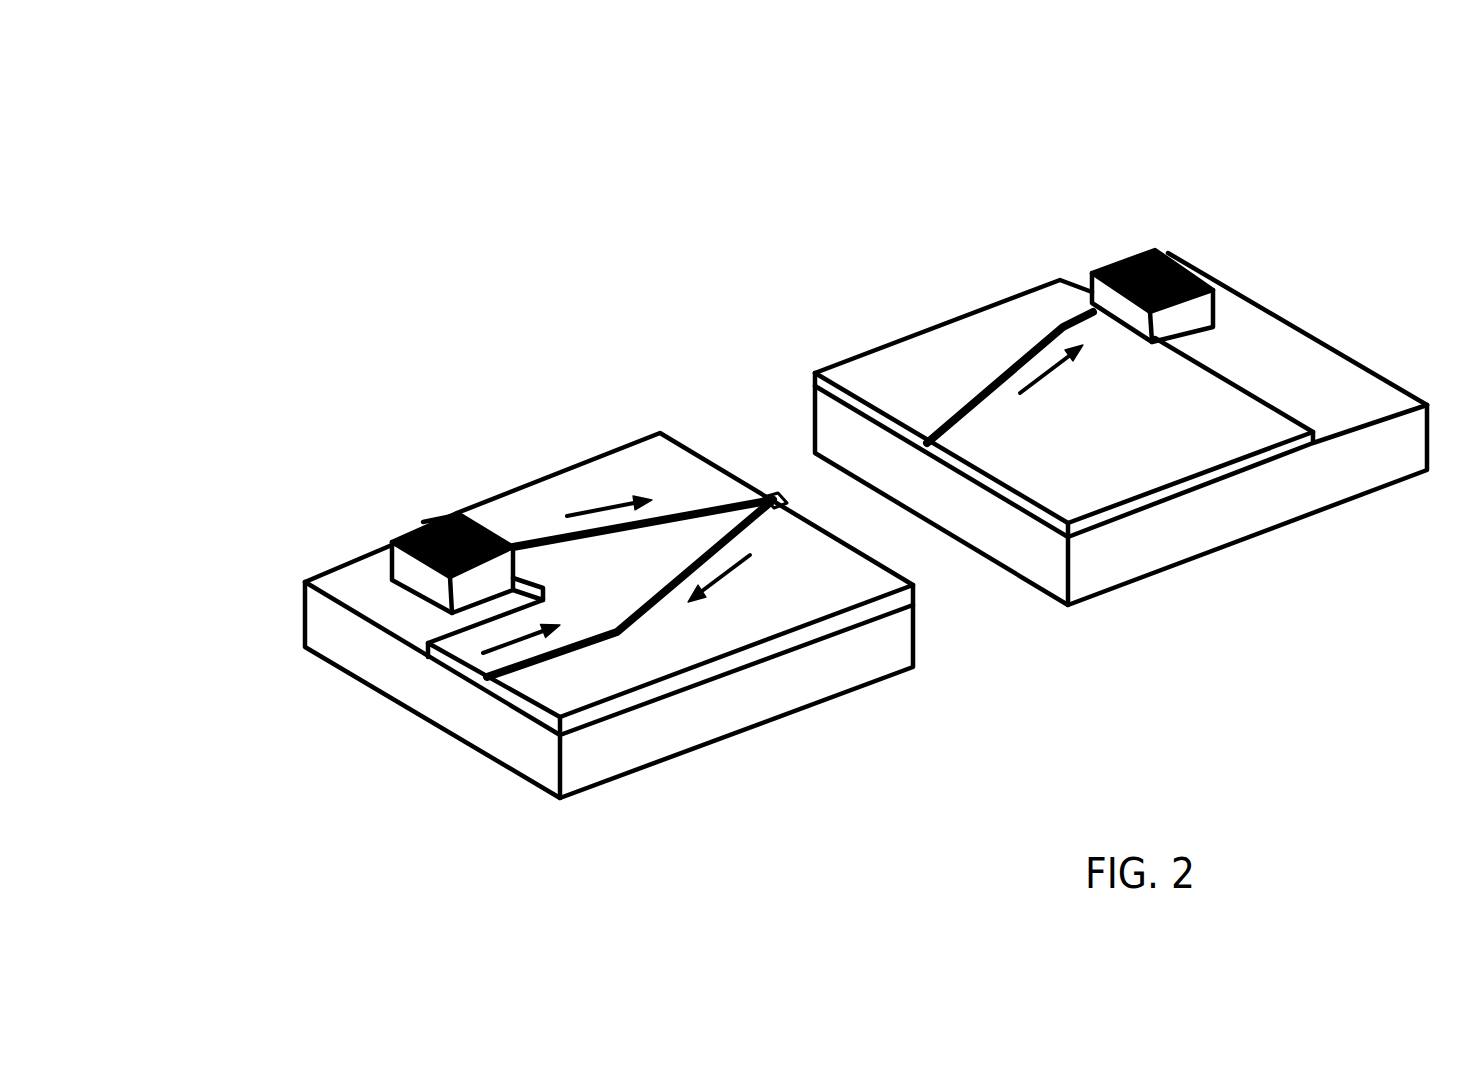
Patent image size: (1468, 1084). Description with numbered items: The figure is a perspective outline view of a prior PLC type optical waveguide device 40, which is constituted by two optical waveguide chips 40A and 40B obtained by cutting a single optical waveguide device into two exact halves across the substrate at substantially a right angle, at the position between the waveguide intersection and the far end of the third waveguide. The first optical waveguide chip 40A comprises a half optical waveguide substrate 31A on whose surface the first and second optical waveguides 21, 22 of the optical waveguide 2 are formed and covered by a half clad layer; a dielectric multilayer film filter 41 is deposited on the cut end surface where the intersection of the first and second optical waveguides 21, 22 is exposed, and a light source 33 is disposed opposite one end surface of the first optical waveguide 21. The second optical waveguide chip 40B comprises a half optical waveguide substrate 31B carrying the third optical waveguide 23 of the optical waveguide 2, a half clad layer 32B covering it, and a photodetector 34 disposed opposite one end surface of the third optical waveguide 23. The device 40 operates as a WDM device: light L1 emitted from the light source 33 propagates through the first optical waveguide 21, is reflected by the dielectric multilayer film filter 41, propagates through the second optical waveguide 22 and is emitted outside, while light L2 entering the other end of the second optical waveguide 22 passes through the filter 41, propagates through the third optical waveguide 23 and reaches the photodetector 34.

The optical waveguide device 40 is at (719, 271).
The first optical waveguide chip 40A is at (634, 416).
The second optical waveguide chip 40B is at (1077, 239).
The half optical waveguide substrate 31A is at (487, 503).
The half optical waveguide substrate 31B is at (1298, 502).
The half clad layer 32B is at (1173, 495).
The light source 33 is at (410, 532).
The photodetector 34 is at (1193, 263).
The first optical waveguide 21 is at (597, 508).
The second optical waveguide 22 is at (550, 660).
The third optical waveguide 23 is at (997, 380).
The dielectric multilayer film filter 41 is at (787, 500).
The optical waveguide 2 is at (650, 618).
The light L1 is at (565, 472).
The light L2 is at (500, 650).